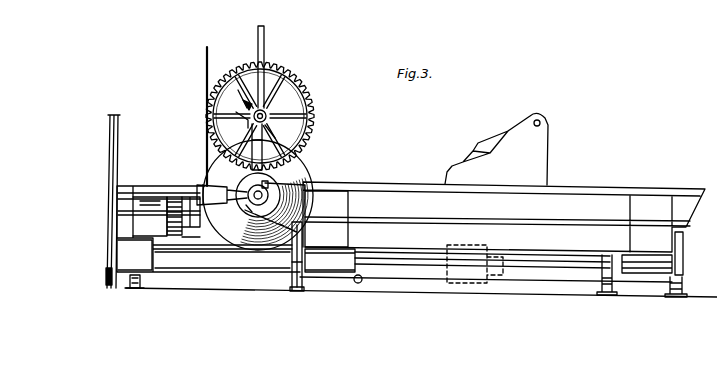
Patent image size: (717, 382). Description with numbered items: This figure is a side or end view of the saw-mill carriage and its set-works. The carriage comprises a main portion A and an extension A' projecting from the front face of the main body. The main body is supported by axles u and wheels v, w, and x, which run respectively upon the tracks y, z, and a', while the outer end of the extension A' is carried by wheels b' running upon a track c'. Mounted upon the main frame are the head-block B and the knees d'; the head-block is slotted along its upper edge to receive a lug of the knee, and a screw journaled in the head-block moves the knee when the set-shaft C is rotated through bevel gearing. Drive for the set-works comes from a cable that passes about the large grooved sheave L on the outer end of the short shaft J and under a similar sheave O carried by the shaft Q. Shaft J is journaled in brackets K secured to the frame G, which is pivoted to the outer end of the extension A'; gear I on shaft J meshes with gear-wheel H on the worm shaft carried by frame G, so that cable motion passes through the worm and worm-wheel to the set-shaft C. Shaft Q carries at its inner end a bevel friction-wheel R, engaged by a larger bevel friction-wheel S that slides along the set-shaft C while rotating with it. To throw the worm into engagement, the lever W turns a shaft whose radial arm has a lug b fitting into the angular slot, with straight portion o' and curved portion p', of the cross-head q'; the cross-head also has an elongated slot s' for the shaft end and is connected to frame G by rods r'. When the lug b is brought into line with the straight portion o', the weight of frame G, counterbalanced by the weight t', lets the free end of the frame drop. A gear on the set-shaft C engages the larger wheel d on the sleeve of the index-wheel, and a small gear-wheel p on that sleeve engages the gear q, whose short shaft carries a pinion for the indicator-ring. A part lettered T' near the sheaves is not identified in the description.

The sheave O is at (110, 163).
The grooved sheave L is at (107, 275).
The gear-wheel H is at (170, 240).
The frame G is at (192, 240).
The extension A' is at (222, 261).
The shaft Q is at (152, 193).
The short shaft J is at (155, 207).
The gear I is at (174, 197).
The brackets K is at (188, 197).
The wheels b' is at (146, 284).
The track c' is at (133, 300).
The bevel friction-wheel S is at (258, 195).
The elongated slot s' is at (265, 176).
The rods r' is at (242, 218).
The bevel friction-wheel R is at (222, 195).
The set-shaft C is at (268, 192).
The weight t' is at (389, 260).
The wheel v is at (291, 265).
The track y is at (297, 292).
The lug b is at (260, 116).
The gear wheel d is at (267, 116).
The wheel x is at (694, 277).
The straight portion of angular slot o' is at (244, 103).
The curved portion of angular slot p' is at (248, 91).
The cross-head q' is at (235, 123).
The small gear-wheel p is at (268, 129).
The gear q is at (278, 138).
The lever W is at (266, 45).
The rod T' is at (228, 116).
The head-block B is at (504, 217).
The main portion of carriage A is at (486, 218).
The knees d' is at (496, 149).
The axles u is at (385, 254).
The wheel w is at (601, 274).
The track z is at (603, 296).
The track a' is at (676, 298).